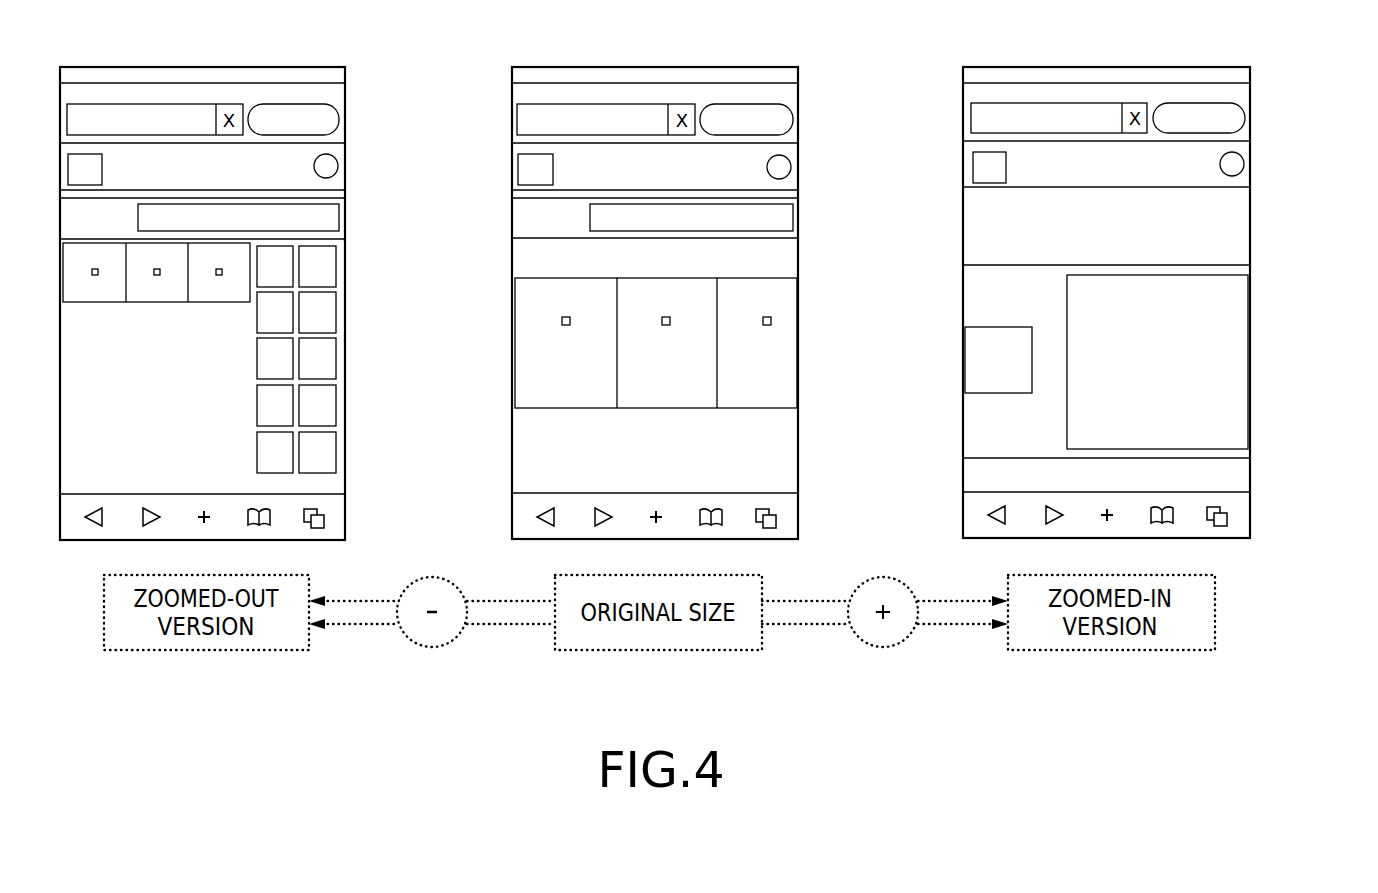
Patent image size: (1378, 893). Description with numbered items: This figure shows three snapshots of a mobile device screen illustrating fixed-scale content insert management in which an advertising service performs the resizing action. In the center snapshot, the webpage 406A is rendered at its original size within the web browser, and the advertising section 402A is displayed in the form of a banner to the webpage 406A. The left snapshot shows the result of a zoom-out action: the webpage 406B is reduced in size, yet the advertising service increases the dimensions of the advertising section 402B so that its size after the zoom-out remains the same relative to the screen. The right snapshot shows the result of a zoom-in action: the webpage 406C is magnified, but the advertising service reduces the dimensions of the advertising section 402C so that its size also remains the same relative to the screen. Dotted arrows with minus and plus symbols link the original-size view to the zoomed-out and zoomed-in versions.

The advertising section 402A is at (791, 163).
The advertising section 402B is at (338, 162).
The advertising section 402C is at (1244, 161).
The webpage 406A is at (778, 388).
The webpage 406B is at (317, 390).
The webpage 406C is at (1235, 438).